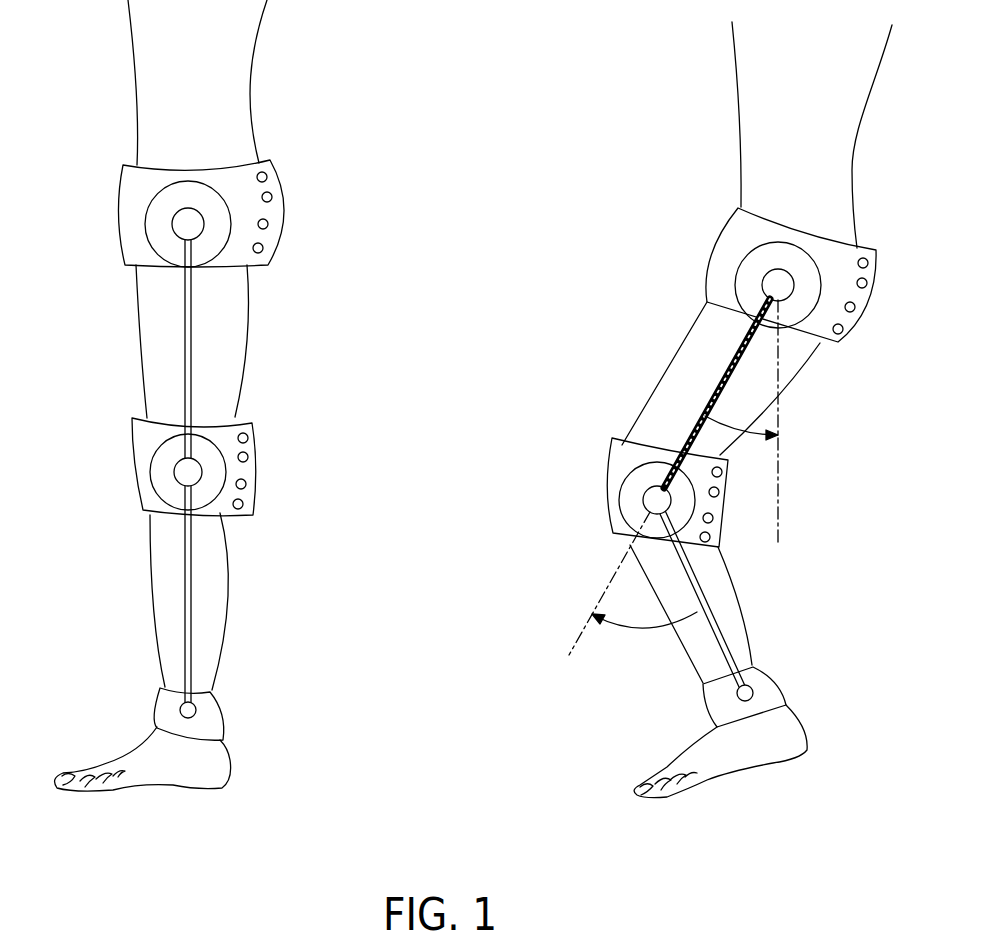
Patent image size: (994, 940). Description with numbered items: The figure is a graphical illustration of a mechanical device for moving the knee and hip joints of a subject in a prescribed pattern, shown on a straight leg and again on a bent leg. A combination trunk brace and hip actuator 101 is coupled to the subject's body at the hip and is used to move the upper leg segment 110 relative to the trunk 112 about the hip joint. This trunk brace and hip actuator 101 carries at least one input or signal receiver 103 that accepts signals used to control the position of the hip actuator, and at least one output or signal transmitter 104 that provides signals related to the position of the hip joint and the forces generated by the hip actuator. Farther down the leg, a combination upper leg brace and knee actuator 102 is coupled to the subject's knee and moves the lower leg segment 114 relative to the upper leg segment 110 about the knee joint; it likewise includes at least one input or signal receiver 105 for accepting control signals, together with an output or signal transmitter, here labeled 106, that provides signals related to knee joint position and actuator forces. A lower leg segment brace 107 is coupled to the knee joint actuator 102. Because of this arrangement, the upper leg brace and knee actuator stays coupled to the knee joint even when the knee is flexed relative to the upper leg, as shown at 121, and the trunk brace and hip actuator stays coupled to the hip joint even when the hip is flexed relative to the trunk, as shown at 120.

The trunk brace and hip actuator 101 is at (155, 233).
The upper leg brace and knee actuator 102 is at (155, 473).
The input or signal receiver 103 is at (272, 189).
The output or signal transmitter 104 is at (277, 236).
The input or signal receiver 105 is at (255, 454).
The knee cuff fastening holes 106 is at (255, 497).
The lower leg segment brace 107 is at (157, 717).
The upper leg segment 110 is at (248, 367).
The trunk 112 is at (247, 88).
The lower leg segment 114 is at (233, 575).
The flexed position of hip joint 120 is at (750, 437).
The flexed position of knee joint 121 is at (623, 630).